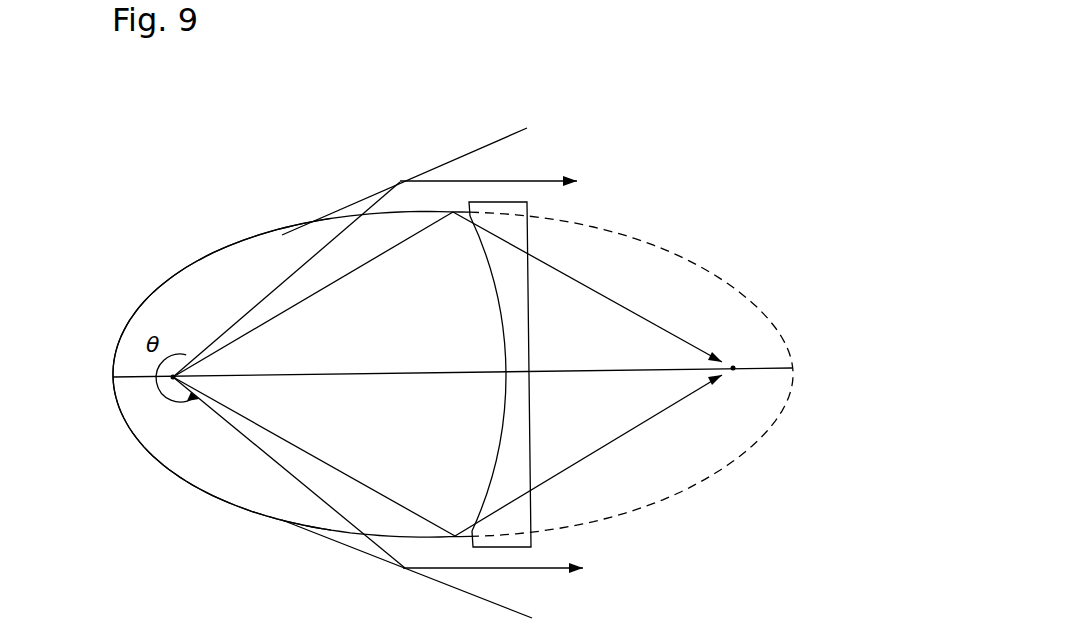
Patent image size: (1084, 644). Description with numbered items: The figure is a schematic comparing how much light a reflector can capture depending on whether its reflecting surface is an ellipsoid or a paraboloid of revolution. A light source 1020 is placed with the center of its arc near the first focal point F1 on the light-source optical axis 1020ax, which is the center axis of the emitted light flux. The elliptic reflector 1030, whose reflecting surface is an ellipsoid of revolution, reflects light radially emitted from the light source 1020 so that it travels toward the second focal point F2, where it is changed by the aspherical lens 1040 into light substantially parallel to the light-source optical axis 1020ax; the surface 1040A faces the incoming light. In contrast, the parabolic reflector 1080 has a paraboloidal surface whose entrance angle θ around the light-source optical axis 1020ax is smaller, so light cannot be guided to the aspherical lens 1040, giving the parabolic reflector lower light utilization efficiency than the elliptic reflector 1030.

The light source 1020 is at (144, 413).
The elliptic reflector 1030 is at (328, 221).
The parabolic reflector 1080 is at (457, 160).
The light-source optical axis 1020ax is at (769, 368).
The aspherical lens 1040 is at (530, 212).
The lens incident surface 1040A is at (502, 337).
The first focal point F1 is at (175, 382).
The second focal point F2 is at (731, 372).